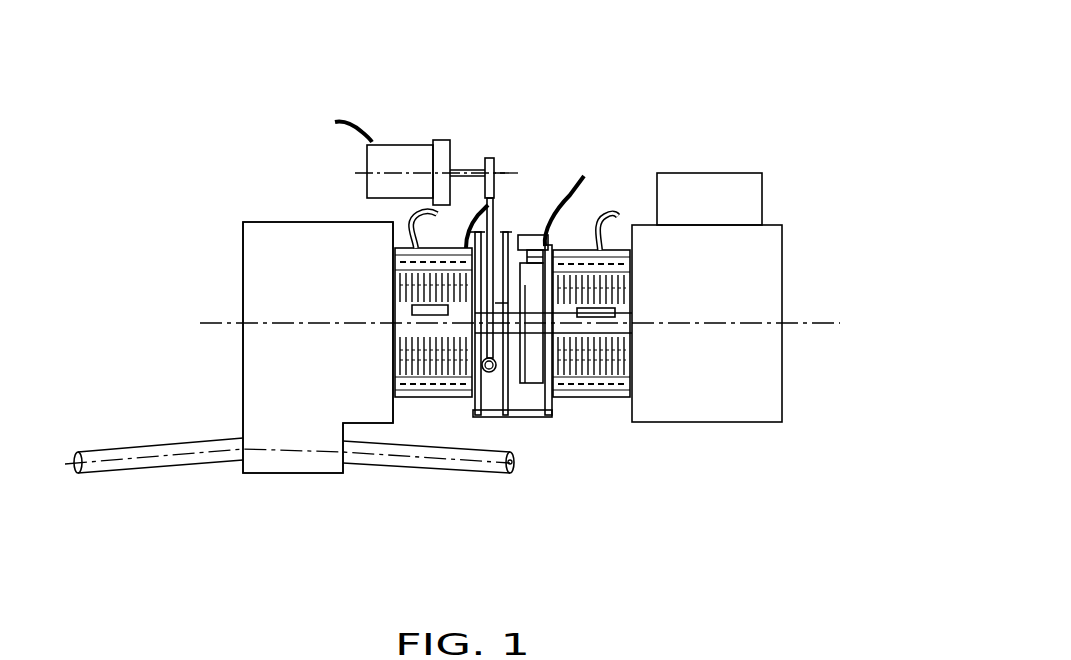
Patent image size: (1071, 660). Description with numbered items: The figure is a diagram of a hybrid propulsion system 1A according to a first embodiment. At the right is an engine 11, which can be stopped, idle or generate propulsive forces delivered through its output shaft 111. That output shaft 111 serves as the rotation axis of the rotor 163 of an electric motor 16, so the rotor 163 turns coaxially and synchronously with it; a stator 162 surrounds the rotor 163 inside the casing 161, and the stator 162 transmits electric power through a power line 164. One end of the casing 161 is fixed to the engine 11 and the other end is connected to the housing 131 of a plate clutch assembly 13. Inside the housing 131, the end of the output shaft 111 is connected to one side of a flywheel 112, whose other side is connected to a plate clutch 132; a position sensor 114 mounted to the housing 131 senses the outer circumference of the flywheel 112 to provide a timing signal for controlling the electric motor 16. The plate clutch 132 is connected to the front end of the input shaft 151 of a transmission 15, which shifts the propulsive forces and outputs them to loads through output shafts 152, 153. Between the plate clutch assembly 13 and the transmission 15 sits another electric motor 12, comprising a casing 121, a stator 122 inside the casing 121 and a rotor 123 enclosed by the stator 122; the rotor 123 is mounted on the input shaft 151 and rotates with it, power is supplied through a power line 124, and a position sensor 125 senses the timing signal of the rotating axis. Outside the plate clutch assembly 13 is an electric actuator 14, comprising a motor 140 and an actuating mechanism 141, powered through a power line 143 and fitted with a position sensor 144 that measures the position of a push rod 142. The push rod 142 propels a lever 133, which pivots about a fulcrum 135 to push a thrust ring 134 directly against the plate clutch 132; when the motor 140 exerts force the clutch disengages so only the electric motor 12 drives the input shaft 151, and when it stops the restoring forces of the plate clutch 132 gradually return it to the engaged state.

The hybrid propulsion system 1A is at (733, 108).
The engine 11 is at (690, 280).
The output shaft 111 is at (610, 332).
The flywheel 112 is at (533, 418).
The position sensor 114 is at (588, 212).
The electric motor 12 is at (331, 360).
The casing 121 is at (397, 400).
The stator 122 is at (405, 387).
The rotor 123 is at (452, 398).
The power line 124 is at (462, 240).
The position sensor 125 is at (405, 246).
The plate clutch assembly 13 is at (492, 340).
The housing 131 is at (500, 418).
The plate clutch 132 is at (516, 236).
The lever 133 is at (512, 230).
The thrust ring 134 is at (487, 374).
The fulcrum 135 is at (478, 408).
The electric actuator 14 is at (422, 182).
The motor 140 is at (413, 143).
The actuating mechanism 141 is at (446, 140).
The push rod 142 is at (488, 156).
The power line 143 is at (352, 122).
The position sensor 144 is at (500, 168).
The transmission 15 is at (236, 252).
The input shaft 151 is at (403, 316).
The output shaft 152 is at (500, 474).
The output shaft 153 is at (185, 464).
The electric motor 16 is at (643, 308).
The casing 161 is at (603, 398).
The stator 162 is at (612, 392).
The rotor 163 is at (617, 358).
The power line 164 is at (622, 212).